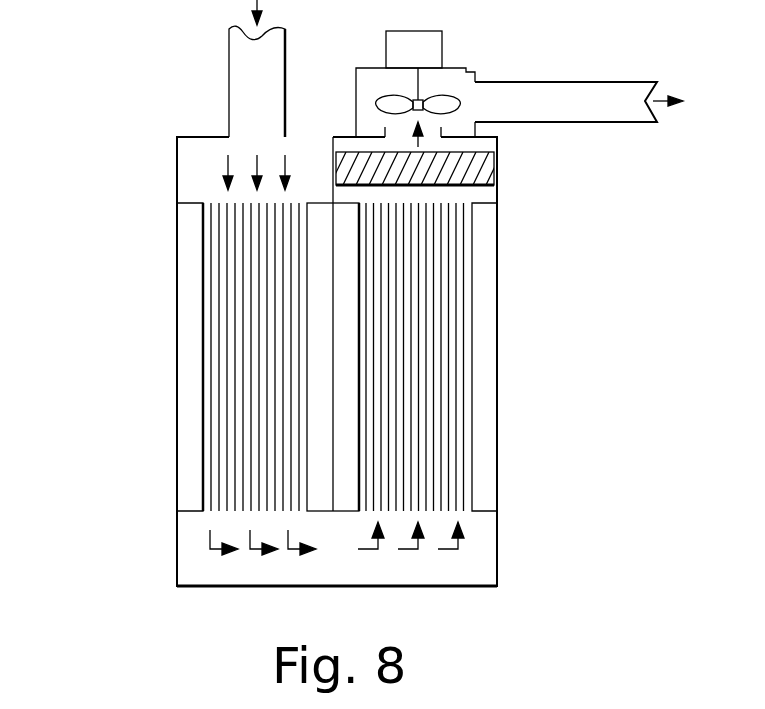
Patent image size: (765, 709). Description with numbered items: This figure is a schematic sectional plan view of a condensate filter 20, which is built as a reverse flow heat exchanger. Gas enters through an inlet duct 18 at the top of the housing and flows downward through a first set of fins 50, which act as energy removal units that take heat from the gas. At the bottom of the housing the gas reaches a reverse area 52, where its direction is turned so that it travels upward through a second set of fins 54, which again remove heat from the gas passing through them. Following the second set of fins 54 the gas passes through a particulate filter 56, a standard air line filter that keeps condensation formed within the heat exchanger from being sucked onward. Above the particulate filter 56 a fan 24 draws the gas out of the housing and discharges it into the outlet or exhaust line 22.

The inlet duct 18 is at (228, 85).
The condensate filter 20 is at (105, 207).
The outlet or exhaust line 22 is at (585, 115).
The fan 24 is at (465, 65).
The first set of fins 50 is at (242, 330).
The reverse area 52 is at (192, 567).
The second set of fins 54 is at (457, 339).
The particulate filter 56 is at (494, 170).